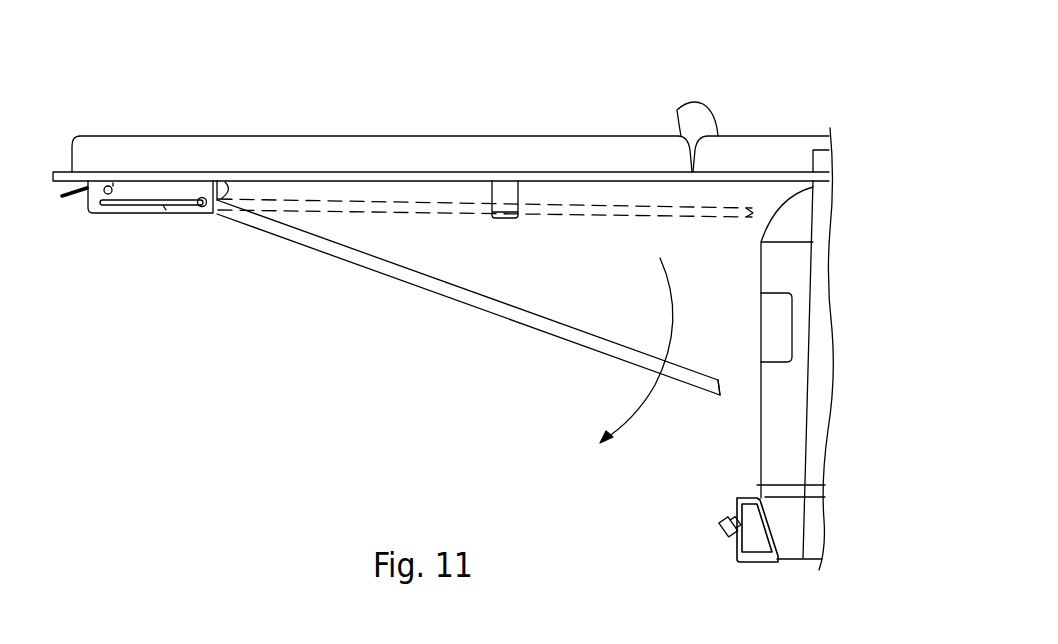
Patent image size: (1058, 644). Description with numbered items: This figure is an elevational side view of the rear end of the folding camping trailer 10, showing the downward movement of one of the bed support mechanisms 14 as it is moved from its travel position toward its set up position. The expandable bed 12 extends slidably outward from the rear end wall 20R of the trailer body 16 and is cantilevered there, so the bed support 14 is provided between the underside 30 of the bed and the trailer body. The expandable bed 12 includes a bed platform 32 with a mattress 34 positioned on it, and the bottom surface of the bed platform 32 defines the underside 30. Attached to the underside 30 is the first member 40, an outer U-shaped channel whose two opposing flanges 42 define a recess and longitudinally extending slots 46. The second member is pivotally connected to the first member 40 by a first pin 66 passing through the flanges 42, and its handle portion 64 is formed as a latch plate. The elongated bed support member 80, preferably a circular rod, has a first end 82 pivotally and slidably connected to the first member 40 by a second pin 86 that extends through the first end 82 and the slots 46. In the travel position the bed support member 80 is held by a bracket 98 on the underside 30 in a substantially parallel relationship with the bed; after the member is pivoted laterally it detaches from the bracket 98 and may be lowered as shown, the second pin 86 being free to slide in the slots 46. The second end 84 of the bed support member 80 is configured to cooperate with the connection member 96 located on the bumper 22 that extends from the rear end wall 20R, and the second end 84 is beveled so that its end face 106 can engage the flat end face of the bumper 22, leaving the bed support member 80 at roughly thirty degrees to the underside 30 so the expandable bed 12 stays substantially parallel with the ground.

The folding camping trailer 10 is at (322, 133).
The expandable bed 12 is at (50, 134).
The bed support mechanism 14 is at (177, 323).
The trailer body 16 is at (795, 435).
The rear end wall 20R is at (749, 456).
The bumper 22 is at (738, 561).
The underside 30 is at (470, 183).
The bed platform 32 is at (53, 182).
The mattress 34 is at (677, 110).
The first member 40 is at (227, 181).
The flange 42 is at (140, 190).
The slot 46 is at (164, 210).
The handle portion 64 is at (108, 186).
The first pin 66 is at (113, 183).
The bed support member 80 is at (587, 347).
The first end 82 is at (220, 236).
The second end 84 is at (698, 362).
The second pin 86 is at (205, 212).
The connection member 96 is at (724, 528).
The bracket 98 is at (517, 217).
The end face 106 is at (722, 393).